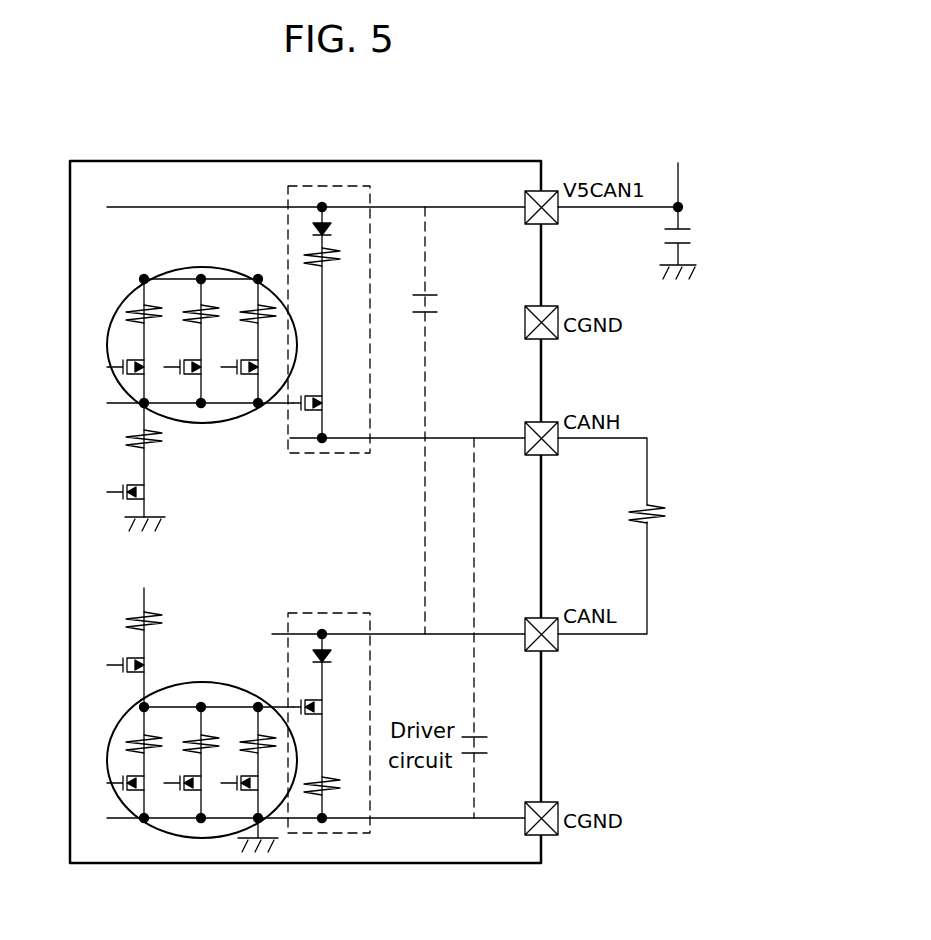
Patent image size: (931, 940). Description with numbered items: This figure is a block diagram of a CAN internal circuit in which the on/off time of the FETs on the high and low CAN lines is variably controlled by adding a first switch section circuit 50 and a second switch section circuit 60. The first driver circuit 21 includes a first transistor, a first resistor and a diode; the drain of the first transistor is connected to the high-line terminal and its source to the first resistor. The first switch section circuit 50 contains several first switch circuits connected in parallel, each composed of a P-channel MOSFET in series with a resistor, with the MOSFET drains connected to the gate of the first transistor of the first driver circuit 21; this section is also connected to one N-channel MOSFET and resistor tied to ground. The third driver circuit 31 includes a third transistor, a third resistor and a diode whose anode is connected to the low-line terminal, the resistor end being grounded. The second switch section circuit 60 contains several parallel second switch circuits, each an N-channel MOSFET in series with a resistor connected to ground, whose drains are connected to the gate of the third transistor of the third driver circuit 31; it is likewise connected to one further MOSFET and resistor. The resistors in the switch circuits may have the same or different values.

The first driver circuit 21 is at (342, 186).
The third driver circuit 31 is at (347, 833).
The first switch section circuit 50 is at (107, 343).
The second switch section circuit 60 is at (203, 838).